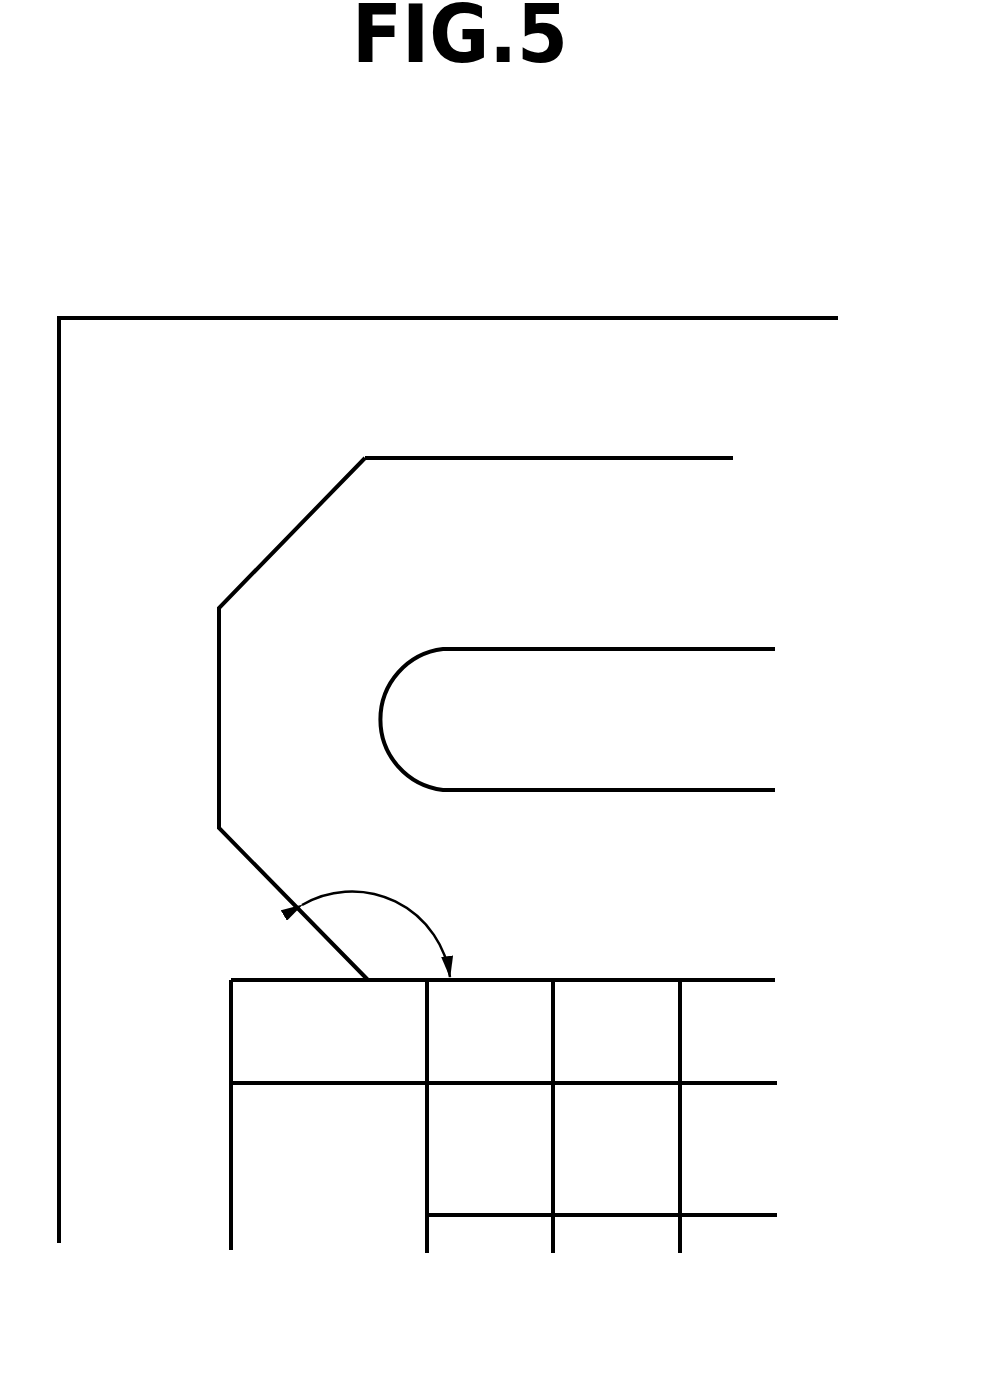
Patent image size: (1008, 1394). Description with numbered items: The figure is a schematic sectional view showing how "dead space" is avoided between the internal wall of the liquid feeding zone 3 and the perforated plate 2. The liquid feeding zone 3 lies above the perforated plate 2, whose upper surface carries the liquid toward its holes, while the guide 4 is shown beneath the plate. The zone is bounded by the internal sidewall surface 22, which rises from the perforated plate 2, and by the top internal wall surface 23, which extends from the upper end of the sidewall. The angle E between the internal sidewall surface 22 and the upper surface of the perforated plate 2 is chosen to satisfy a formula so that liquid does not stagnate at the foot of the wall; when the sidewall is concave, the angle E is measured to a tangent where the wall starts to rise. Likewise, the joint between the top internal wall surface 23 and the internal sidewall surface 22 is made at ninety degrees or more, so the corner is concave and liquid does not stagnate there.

The perforated plate 2 is at (620, 978).
The liquid feeding zone 3 is at (642, 697).
The guide 4 is at (683, 1150).
The internal sidewall surface of liquid feeding zone 22 is at (222, 648).
The top internal wall surface 23 is at (490, 460).
The angle E is at (376, 915).